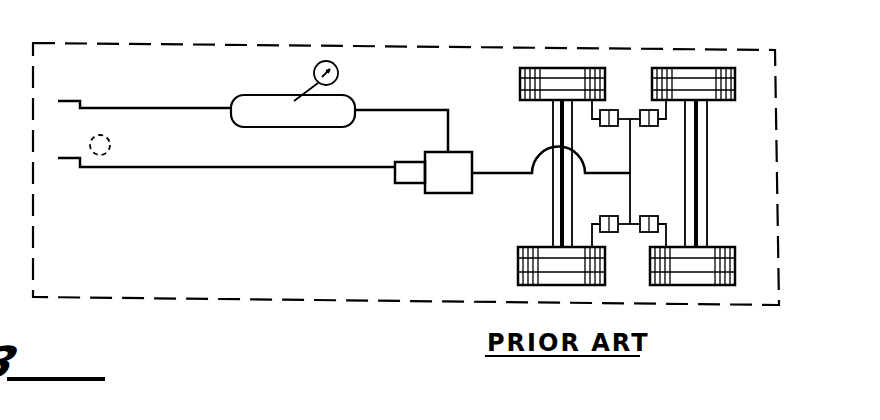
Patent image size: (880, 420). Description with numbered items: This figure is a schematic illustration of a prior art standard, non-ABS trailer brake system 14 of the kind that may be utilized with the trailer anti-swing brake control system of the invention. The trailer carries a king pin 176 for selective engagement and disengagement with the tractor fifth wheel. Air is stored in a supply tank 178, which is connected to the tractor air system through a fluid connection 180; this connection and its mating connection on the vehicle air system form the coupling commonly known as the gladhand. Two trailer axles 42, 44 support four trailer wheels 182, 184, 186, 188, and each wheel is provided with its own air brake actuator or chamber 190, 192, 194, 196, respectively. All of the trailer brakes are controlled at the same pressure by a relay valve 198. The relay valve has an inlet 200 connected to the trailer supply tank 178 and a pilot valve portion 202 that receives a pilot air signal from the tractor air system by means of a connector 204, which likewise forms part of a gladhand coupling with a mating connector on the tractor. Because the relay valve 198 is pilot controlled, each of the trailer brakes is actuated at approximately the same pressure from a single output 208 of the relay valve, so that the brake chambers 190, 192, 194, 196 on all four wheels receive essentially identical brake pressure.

The prior art vehicle air brake system 14 is at (418, 300).
The trailer axle 42 is at (530, 227).
The trailer axle 44 is at (712, 204).
The king pin 176 is at (105, 141).
The supply tank 178 is at (272, 110).
The fluid connection 180 is at (86, 103).
The trailer wheel 182 is at (682, 76).
The trailer wheel 184 is at (710, 278).
The trailer wheel 186 is at (565, 76).
The trailer wheel 188 is at (522, 273).
The air brake actuator or chamber 190 is at (651, 127).
The air brake actuator or chamber 192 is at (648, 216).
The air brake actuator or chamber 194 is at (607, 127).
The air brake actuator or chamber 196 is at (610, 216).
The relay valve 198 is at (440, 162).
The inlet 200 is at (448, 128).
The pilot valve portion 202 is at (402, 184).
The connector 204 is at (80, 163).
The output 208 is at (490, 174).